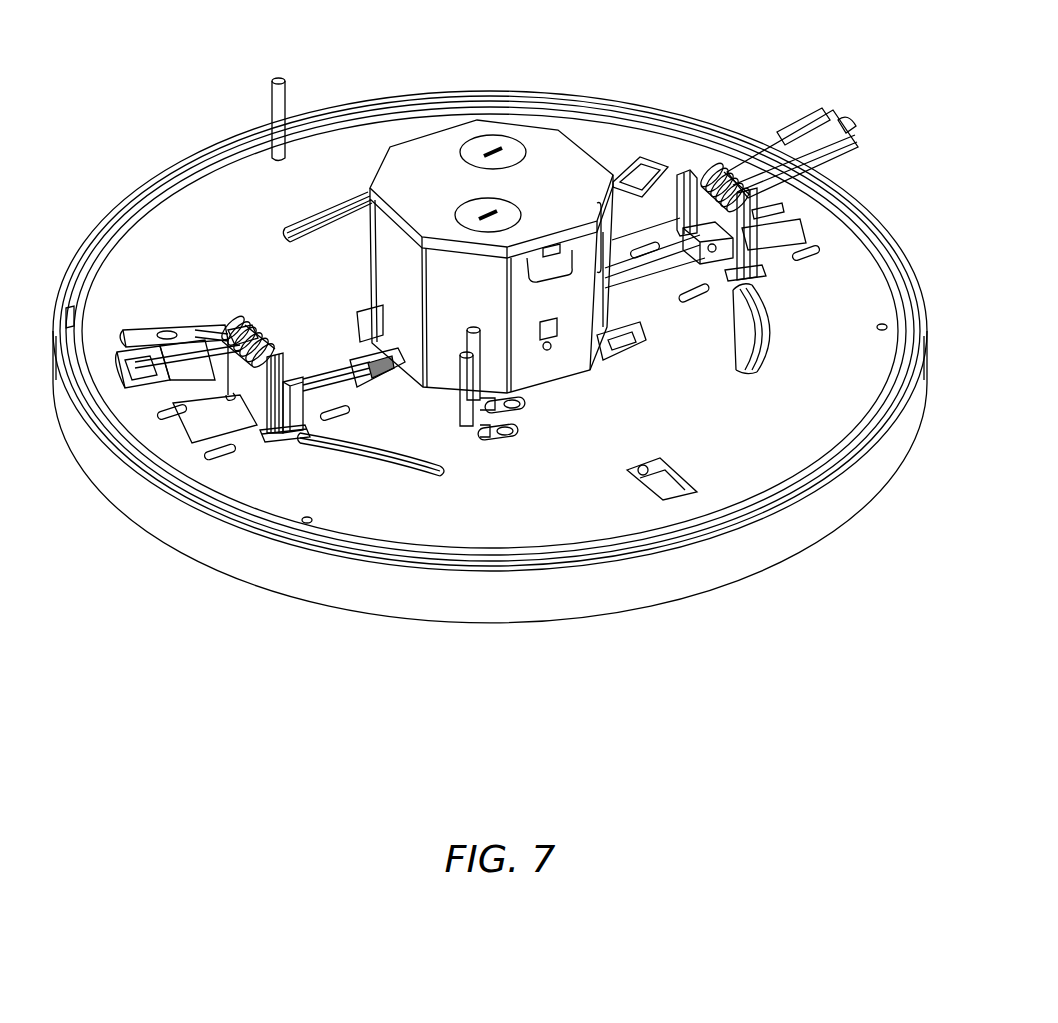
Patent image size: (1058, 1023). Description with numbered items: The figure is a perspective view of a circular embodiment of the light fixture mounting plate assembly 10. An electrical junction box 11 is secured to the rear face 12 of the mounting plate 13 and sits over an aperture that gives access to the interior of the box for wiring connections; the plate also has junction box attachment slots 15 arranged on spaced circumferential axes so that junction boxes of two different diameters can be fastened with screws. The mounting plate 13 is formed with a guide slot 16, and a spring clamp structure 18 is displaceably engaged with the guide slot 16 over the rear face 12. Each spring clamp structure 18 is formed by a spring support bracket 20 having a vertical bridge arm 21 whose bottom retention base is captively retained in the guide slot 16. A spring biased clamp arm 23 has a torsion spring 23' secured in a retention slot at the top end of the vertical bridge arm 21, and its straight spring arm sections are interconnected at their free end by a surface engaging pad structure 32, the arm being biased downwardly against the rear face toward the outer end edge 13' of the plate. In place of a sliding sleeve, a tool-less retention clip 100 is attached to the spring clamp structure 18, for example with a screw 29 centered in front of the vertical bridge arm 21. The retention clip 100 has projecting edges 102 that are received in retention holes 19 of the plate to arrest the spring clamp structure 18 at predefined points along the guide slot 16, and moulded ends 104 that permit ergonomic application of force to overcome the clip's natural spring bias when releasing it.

The mounting plate assembly 10 is at (483, 493).
The electrical junction box 11 is at (543, 143).
The rear face 12 is at (800, 395).
The mounting plate 13 is at (490, 352).
The outer end edge 13' is at (485, 457).
The junction box attachment slots 15 is at (518, 432).
The guide slot 16 is at (357, 388).
The spring clamp structure 18 is at (718, 160).
The retention holes 19 is at (340, 420).
The spring support bracket 20 is at (200, 323).
The vertical bridge arm 21 is at (828, 216).
The spring biased clamp arm 23 is at (174, 293).
The torsion spring 23' is at (266, 331).
The screw 29 is at (718, 278).
The surface engaging pad structure 32 is at (162, 387).
The retention clip 100 is at (285, 440).
The projecting edges 102 is at (275, 438).
The moulded ends 104 is at (345, 383).